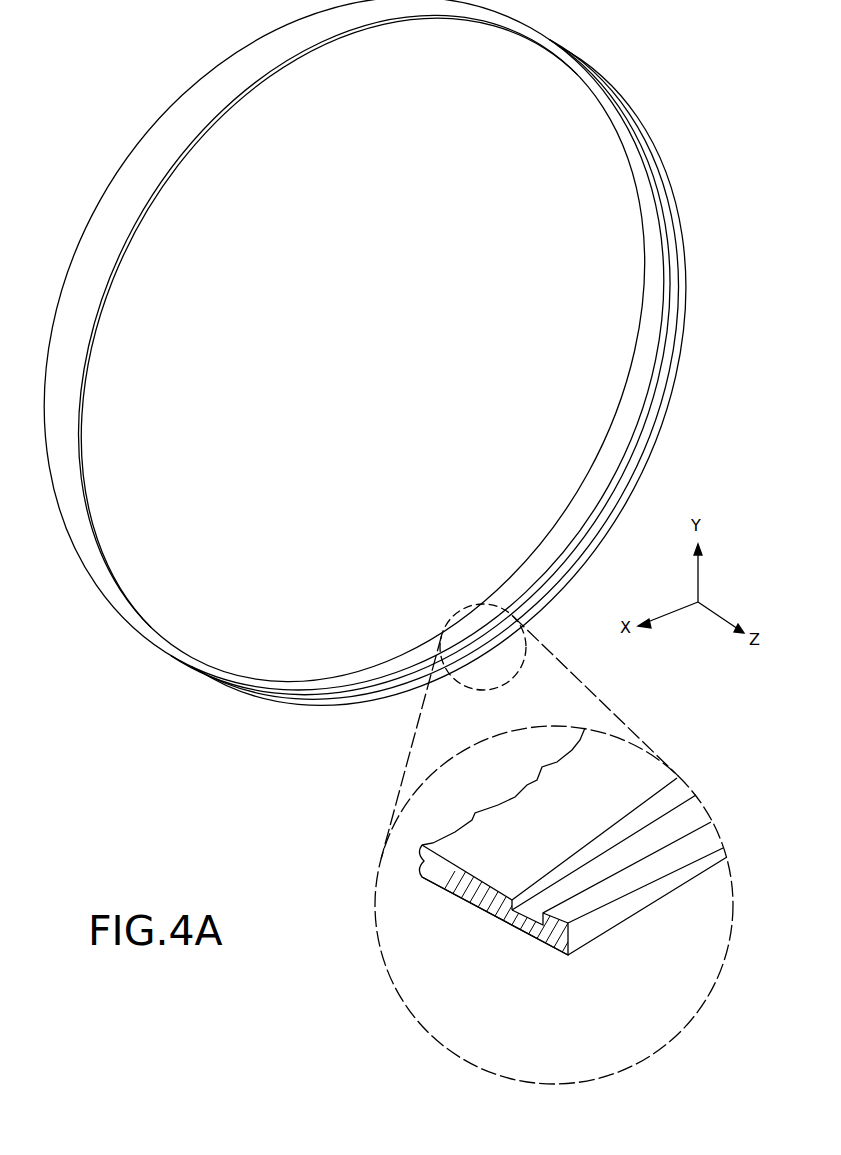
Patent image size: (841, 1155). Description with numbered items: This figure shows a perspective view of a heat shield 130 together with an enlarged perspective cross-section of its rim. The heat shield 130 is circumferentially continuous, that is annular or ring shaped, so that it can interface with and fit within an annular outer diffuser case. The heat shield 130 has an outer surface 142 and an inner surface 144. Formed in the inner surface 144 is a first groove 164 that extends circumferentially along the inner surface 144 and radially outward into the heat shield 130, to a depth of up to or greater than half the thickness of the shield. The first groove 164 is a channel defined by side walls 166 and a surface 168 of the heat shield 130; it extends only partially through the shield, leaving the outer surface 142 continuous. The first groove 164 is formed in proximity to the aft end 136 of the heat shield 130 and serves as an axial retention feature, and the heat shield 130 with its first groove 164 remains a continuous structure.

The heat shield 130 is at (183, 63).
The aft end 136 is at (230, 113).
The outer surface 142 is at (178, 156).
The inner surface 144 is at (632, 413).
The first groove 164 is at (629, 841).
The side walls 166 is at (511, 909).
The surface 168 is at (506, 928).